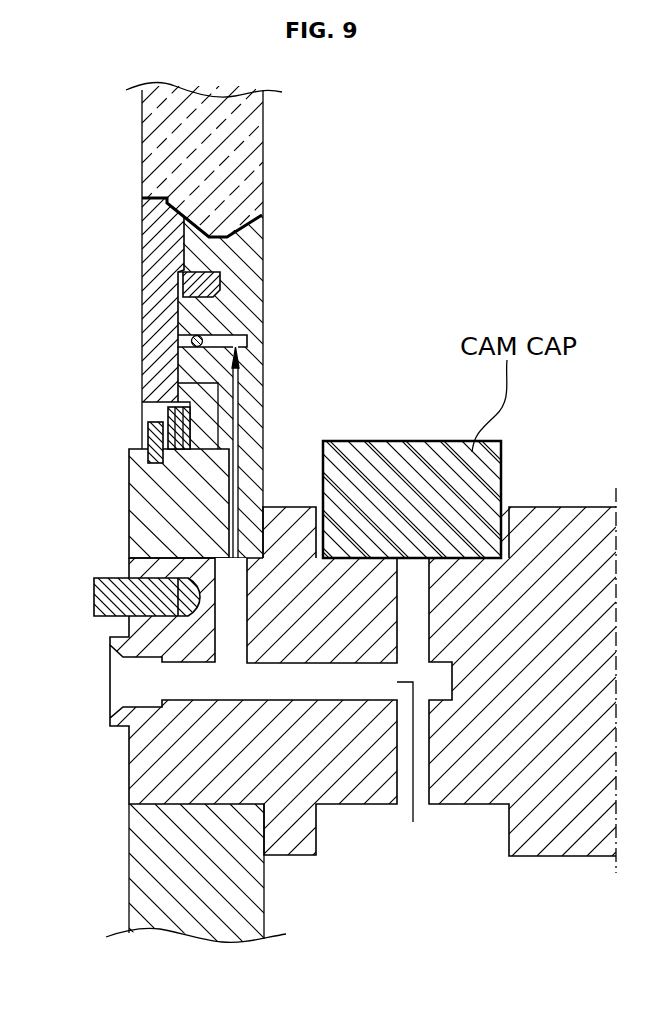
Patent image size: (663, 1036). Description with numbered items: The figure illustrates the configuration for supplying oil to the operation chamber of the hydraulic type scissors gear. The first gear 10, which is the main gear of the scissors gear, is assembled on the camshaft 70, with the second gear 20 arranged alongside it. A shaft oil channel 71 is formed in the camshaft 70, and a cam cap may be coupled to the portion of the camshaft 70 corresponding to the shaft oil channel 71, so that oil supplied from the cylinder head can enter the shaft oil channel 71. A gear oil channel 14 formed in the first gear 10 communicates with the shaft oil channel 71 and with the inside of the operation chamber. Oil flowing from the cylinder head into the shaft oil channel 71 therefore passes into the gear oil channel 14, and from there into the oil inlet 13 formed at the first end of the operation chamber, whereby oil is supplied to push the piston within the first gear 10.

The first gear 10 is at (243, 278).
The second gear 20 is at (157, 259).
The oil inlet 13 is at (188, 339).
The gear oil channel 14 is at (241, 390).
The camshaft 70 is at (553, 812).
The shaft oil channel 71 is at (345, 690).